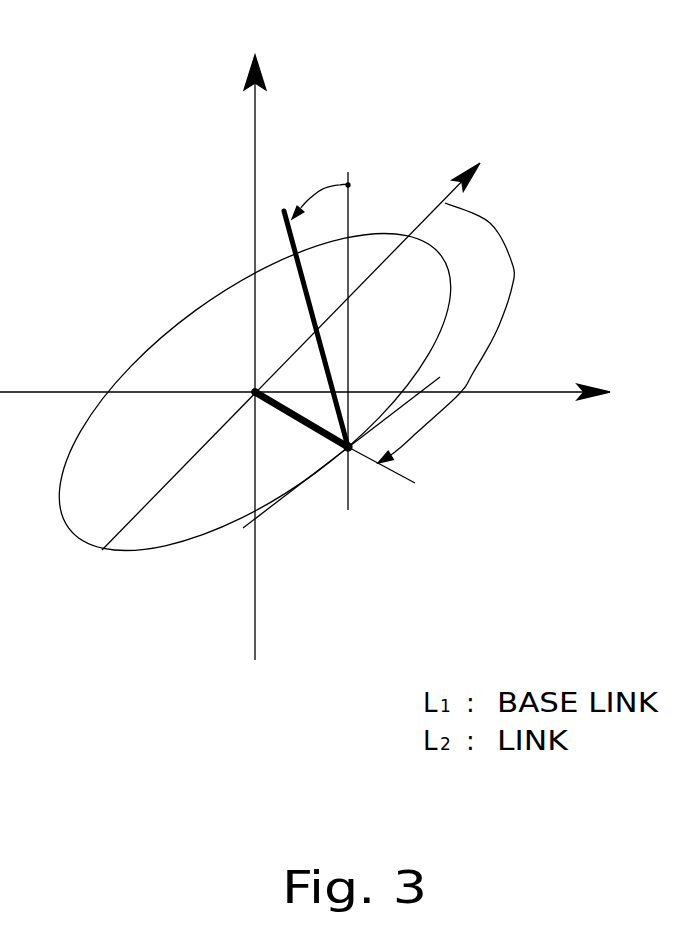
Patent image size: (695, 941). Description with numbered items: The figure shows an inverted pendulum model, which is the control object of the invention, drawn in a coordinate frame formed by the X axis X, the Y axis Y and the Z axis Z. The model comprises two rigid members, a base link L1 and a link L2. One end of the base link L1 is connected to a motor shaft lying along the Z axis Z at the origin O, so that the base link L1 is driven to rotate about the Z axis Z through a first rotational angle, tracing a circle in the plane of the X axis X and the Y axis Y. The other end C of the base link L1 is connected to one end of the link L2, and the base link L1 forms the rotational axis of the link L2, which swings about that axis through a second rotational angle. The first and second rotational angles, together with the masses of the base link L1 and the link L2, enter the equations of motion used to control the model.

The base link L1 is at (301, 427).
The link L2 is at (307, 329).
The origin O is at (238, 374).
The other end of the base link C is at (360, 477).
The X axis X is at (322, 393).
The Y axis Y is at (306, 344).
The Z axis Z is at (256, 340).